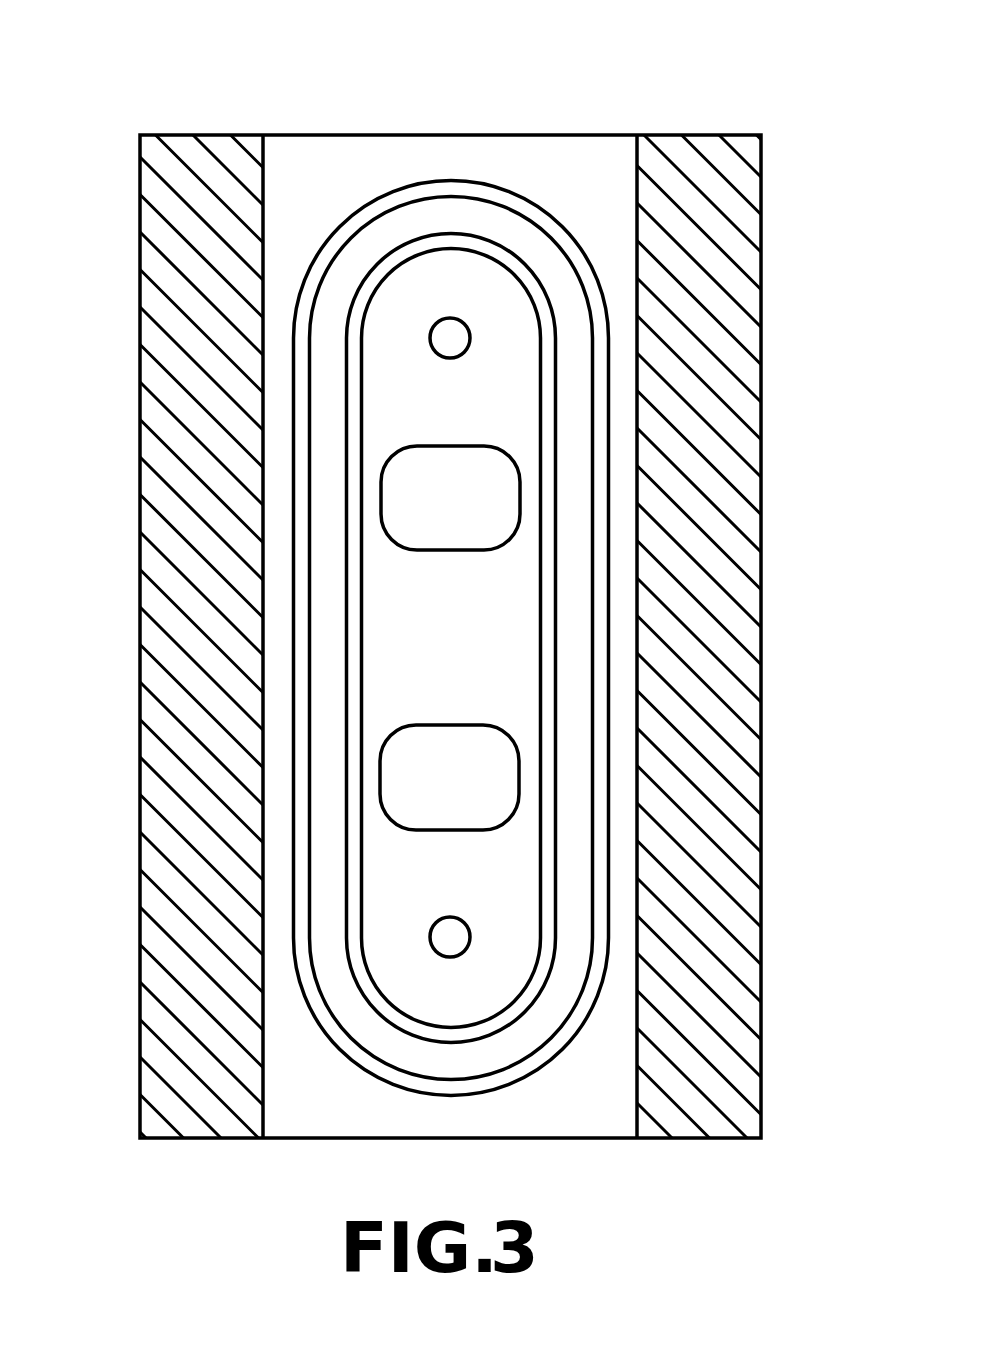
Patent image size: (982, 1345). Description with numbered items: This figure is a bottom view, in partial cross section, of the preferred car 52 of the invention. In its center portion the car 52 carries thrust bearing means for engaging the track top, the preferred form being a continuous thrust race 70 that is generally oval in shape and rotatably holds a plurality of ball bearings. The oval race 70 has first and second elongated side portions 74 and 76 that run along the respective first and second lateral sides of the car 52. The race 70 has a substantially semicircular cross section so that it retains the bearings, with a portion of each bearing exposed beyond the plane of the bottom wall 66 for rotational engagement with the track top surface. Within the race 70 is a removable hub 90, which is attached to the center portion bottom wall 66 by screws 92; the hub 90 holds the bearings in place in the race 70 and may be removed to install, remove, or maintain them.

The car 52 is at (608, 96).
The bottom wall 66 is at (333, 181).
The thrust race 70 is at (463, 218).
The first elongated side portion 74 is at (332, 600).
The second elongated side portion 76 is at (573, 665).
The removable hub 90 is at (512, 397).
The screws 92 is at (470, 342).